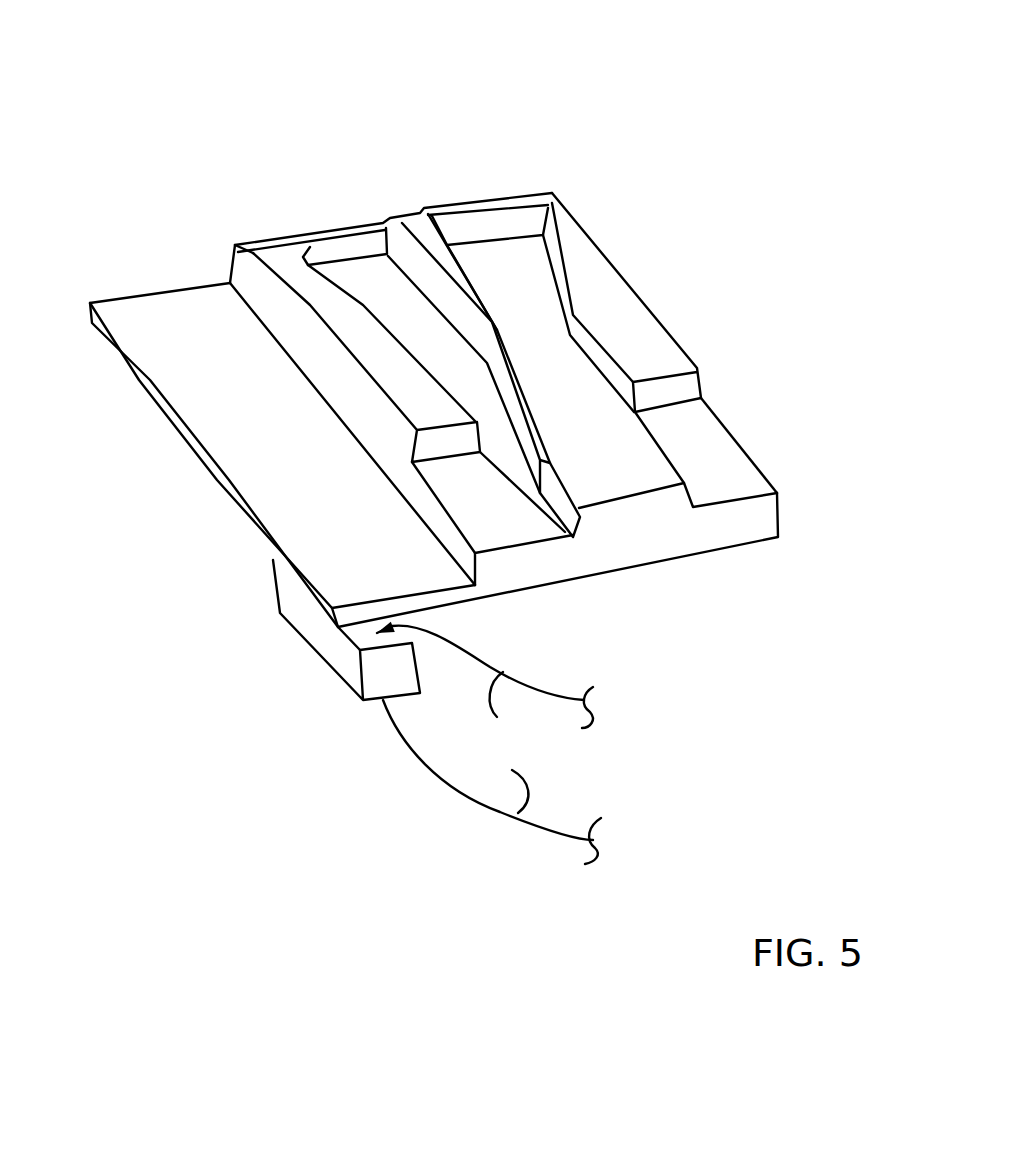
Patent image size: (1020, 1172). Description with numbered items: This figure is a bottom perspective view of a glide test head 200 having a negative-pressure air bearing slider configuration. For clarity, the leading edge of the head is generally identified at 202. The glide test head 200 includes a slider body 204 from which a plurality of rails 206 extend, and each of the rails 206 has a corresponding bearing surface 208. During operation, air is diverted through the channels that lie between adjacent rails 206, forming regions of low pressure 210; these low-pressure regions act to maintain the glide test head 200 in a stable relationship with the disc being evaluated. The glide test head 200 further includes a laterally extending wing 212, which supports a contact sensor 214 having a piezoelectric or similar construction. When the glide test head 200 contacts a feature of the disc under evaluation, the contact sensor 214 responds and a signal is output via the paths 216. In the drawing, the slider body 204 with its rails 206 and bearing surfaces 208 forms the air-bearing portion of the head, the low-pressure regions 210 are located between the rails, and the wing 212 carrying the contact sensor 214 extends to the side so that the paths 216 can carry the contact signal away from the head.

The glide test head 200 is at (719, 123).
The leading edge 202 is at (350, 145).
The slider body 204 is at (726, 481).
The rails 206 is at (688, 392).
The bearing surfaces 208 is at (310, 286).
The regions of low pressure 210 is at (402, 298).
The laterally extending wing 212 is at (253, 460).
The contact sensor 214 is at (322, 633).
The paths 216 is at (485, 691).